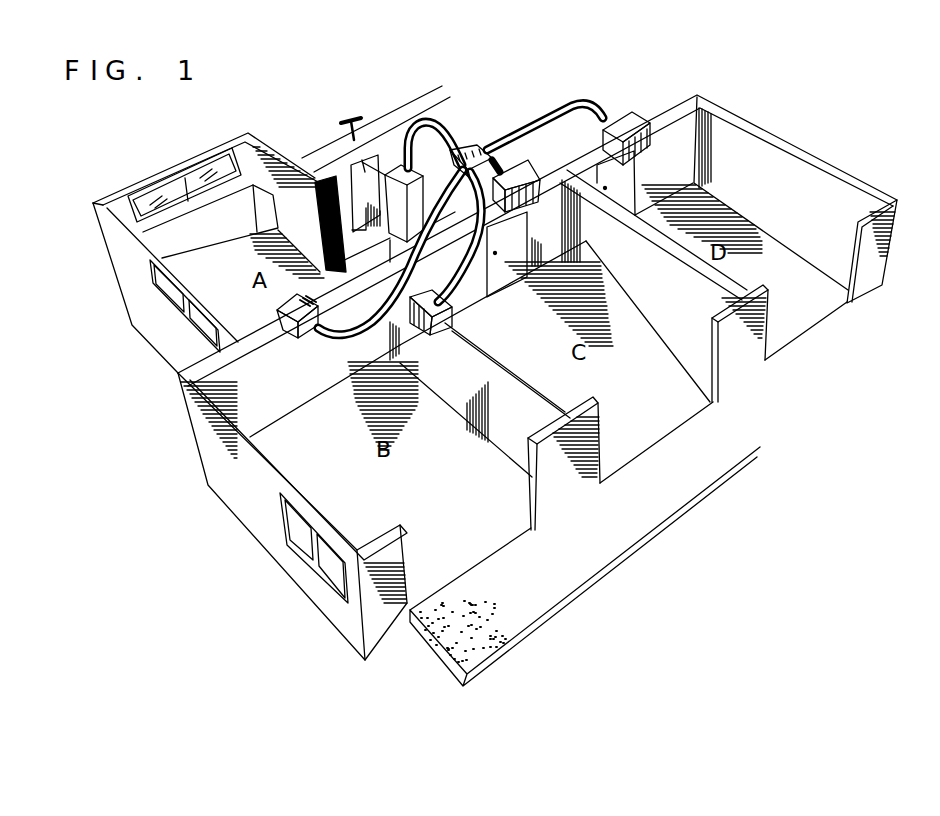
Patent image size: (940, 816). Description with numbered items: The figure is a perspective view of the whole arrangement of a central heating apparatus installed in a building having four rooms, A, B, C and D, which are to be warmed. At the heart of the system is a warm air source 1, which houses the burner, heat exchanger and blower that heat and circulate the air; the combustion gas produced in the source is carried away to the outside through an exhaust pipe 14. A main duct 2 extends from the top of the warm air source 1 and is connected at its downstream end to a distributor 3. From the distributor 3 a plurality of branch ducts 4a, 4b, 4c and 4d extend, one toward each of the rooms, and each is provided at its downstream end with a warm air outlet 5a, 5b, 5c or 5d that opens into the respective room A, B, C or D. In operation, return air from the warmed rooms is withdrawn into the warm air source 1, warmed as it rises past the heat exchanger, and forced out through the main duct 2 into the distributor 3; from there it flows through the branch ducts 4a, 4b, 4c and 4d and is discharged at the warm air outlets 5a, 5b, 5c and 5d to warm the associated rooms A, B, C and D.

The warm air source 1 is at (398, 212).
The main duct 2 is at (440, 133).
The distributor 3 is at (470, 147).
The branch duct 4a is at (355, 338).
The branch duct 4b is at (460, 293).
The branch duct 4c is at (503, 170).
The branch duct 4d is at (603, 110).
The warm air outlet 5a is at (293, 333).
The warm air outlet 5b is at (438, 334).
The warm air outlet 5c is at (530, 202).
The warm air outlet 5d is at (643, 143).
The exhaust pipe 14 is at (387, 165).